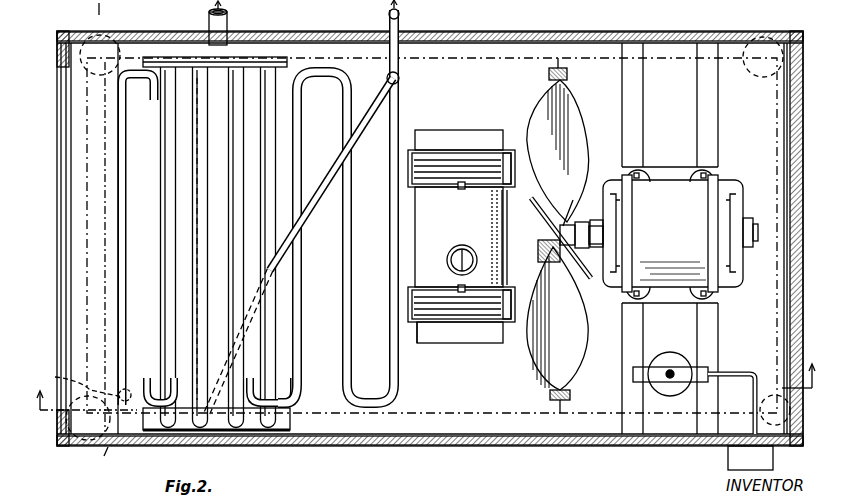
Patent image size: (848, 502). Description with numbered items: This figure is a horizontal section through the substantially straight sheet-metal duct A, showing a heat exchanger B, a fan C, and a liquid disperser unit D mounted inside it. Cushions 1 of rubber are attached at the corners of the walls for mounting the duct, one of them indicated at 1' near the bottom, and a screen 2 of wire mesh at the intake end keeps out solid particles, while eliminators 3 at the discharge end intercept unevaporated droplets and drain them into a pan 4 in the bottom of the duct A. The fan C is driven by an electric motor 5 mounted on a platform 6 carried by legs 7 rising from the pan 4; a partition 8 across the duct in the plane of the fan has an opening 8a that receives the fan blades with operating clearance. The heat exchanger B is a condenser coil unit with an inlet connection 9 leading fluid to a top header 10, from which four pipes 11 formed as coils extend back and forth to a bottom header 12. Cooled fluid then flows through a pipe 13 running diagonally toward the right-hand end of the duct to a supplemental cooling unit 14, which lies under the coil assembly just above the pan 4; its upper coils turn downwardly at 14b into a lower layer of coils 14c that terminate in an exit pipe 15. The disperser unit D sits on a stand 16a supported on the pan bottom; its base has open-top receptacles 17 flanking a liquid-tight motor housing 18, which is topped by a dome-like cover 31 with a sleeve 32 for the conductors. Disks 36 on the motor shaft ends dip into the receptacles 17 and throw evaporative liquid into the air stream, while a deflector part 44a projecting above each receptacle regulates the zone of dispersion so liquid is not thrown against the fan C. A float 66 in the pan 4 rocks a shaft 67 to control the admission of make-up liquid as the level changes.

The cushion 1 is at (424, 221).
The section line 1' is at (100, 458).
The screen 2 is at (790, 133).
The eliminators 3 is at (95, 35).
The pan 4 is at (688, 42).
The electric motor 5 is at (722, 190).
The platform 6 is at (656, 167).
The legs 7 is at (697, 113).
The partition 8 is at (568, 68).
The opening 8a is at (570, 84).
The inlet connection 9 is at (228, 22).
The top header 10 is at (285, 75).
The pipes 11 is at (160, 56).
The bottom header 12 is at (290, 412).
The pipe 13 is at (348, 165).
The supplemental cooling unit 14 is at (356, 94).
The downward coil portion 14b is at (80, 376).
The lower layer of coils 14c is at (296, 342).
The exit pipe 15 is at (400, 16).
The stand 16a is at (440, 345).
The receptacles 17 is at (432, 150).
The motor housing 18 is at (435, 220).
The cover 31 is at (462, 248).
The sleeve 32 is at (450, 258).
The disks 36 is at (490, 150).
The deflector part 44a is at (510, 171).
The float 66 is at (670, 397).
The shaft 67 is at (757, 374).
The duct A is at (674, 218).
The heat exchanger B is at (185, 221).
The fan C is at (559, 234).
The liquid disperser unit D is at (436, 247).